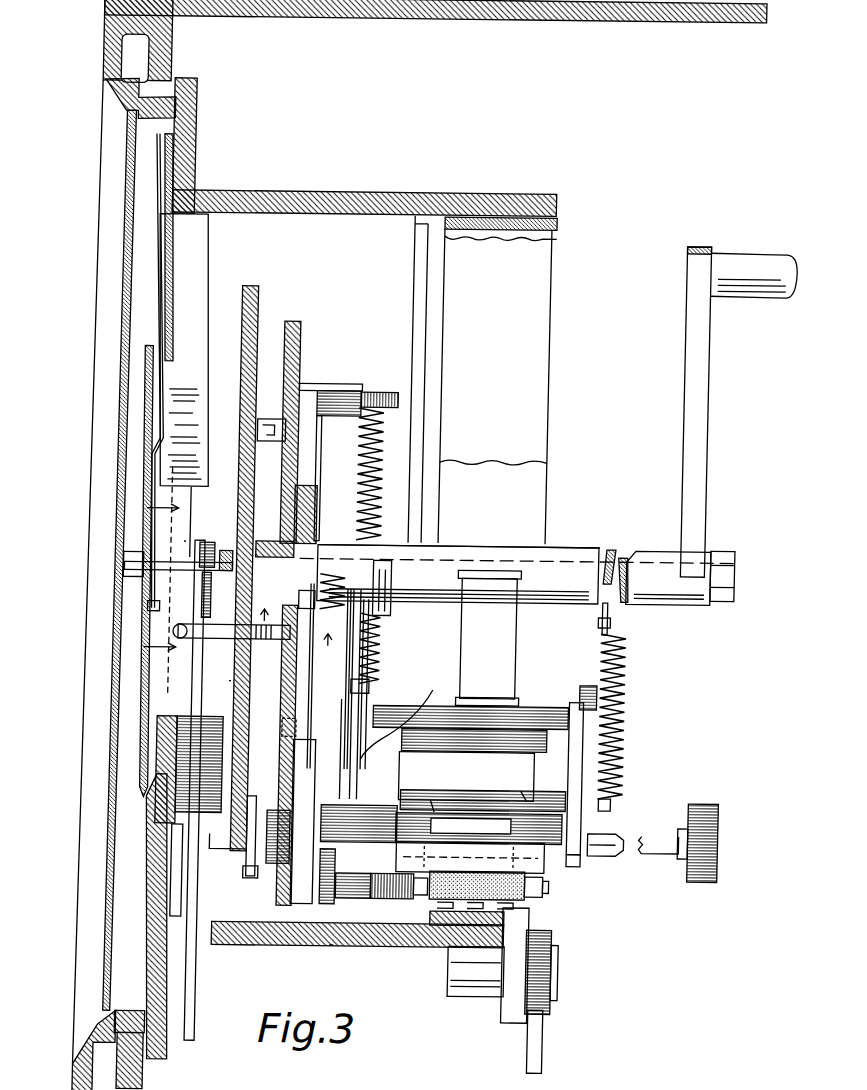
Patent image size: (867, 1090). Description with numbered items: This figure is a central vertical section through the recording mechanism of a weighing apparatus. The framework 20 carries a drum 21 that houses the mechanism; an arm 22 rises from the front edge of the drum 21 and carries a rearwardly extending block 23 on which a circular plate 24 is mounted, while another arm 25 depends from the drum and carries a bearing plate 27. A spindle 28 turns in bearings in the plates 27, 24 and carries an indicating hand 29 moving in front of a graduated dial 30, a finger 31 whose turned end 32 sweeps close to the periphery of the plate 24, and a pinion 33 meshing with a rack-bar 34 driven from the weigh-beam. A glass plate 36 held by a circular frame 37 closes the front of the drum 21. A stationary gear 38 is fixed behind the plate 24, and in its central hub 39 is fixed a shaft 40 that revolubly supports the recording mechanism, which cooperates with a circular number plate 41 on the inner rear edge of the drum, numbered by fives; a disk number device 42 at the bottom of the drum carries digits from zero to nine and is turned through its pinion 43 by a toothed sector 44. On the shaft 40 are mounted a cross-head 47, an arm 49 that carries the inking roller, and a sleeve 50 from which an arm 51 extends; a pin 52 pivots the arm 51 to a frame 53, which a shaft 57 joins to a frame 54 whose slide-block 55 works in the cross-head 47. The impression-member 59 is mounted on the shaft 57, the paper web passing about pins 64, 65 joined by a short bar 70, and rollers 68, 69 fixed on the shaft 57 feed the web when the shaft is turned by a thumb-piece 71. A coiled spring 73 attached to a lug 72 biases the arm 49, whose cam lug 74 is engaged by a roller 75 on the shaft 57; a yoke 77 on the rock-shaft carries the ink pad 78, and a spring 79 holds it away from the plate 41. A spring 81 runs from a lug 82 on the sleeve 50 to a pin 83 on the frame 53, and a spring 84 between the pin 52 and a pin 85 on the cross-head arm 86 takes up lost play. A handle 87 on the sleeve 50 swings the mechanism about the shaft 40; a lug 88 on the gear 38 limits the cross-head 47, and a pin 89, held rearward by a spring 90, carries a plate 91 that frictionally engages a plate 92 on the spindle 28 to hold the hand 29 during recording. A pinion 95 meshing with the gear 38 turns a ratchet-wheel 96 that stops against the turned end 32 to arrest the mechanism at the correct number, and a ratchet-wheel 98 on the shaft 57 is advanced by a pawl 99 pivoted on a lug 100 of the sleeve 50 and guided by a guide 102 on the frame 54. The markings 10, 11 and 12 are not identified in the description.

The shaft line 10 is at (348, 556).
The rod / motion arrow 11 is at (170, 416).
The adjustment marks 12 is at (294, 619).
The framework 20 is at (286, 22).
The drum 21 is at (300, 194).
The arm 22 is at (160, 858).
The block 23 is at (186, 719).
The circular plate 24 is at (255, 288).
The arm 25 is at (196, 358).
The bearing plate 27 is at (140, 506).
The spindle 28 is at (186, 544).
The indicating hand 29 is at (158, 326).
The graduated dial 30 is at (158, 962).
The finger 31 is at (232, 683).
The turned end 32 is at (232, 856).
The pinion 33 is at (229, 550).
The rack-bar 34 is at (206, 912).
The glass plate 36 is at (112, 818).
The circular frame 37 is at (84, 1083).
The stationary gear 38 is at (296, 476).
The central hub 39 is at (263, 542).
The shaft 40 is at (616, 600).
The number plate 41 is at (552, 240).
The disk number device 42 is at (512, 1008).
The pinion 43 is at (568, 978).
The toothed sector 44 is at (552, 1048).
The cross-head 47 is at (314, 510).
The arm 49 is at (300, 699).
The sleeve 50 is at (572, 546).
The arm 51 is at (520, 670).
The pin 52 is at (372, 676).
The frame 53 is at (588, 766).
The frame 54 is at (425, 824).
The slide-block 55 is at (303, 821).
The shaft 57 is at (664, 852).
The impression-member 59 is at (470, 858).
The pin 64 is at (580, 866).
The pin 65 is at (497, 857).
The roller 68 is at (438, 806).
The roller 69 is at (528, 794).
The short bar 70 is at (590, 856).
The thumb-piece 71 is at (724, 826).
The lug 72 is at (384, 640).
The coiled spring 73 is at (318, 591).
The cam lug 74 is at (340, 948).
The roller 75 is at (313, 736).
The yoke 77 is at (536, 886).
The ink pad 78 is at (462, 870).
The spring 79 is at (396, 900).
The spring 81 is at (628, 672).
The lug 82 is at (600, 622).
The pin 83 is at (618, 804).
The spring 84 is at (380, 484).
The pin 85 is at (386, 392).
The arm 86 is at (312, 460).
The handle 87 is at (706, 340).
The lug 88 is at (284, 736).
The pin 89 is at (344, 650).
The spring 90 is at (258, 642).
The plate 91 is at (192, 504).
The plate 92 is at (177, 572).
The pinion 95 is at (276, 866).
The ratchet-wheel 96 is at (258, 798).
The ratchet-wheel 98 is at (358, 874).
The pawl 99 is at (345, 770).
The lug 100 is at (394, 586).
The guide 102 is at (405, 715).